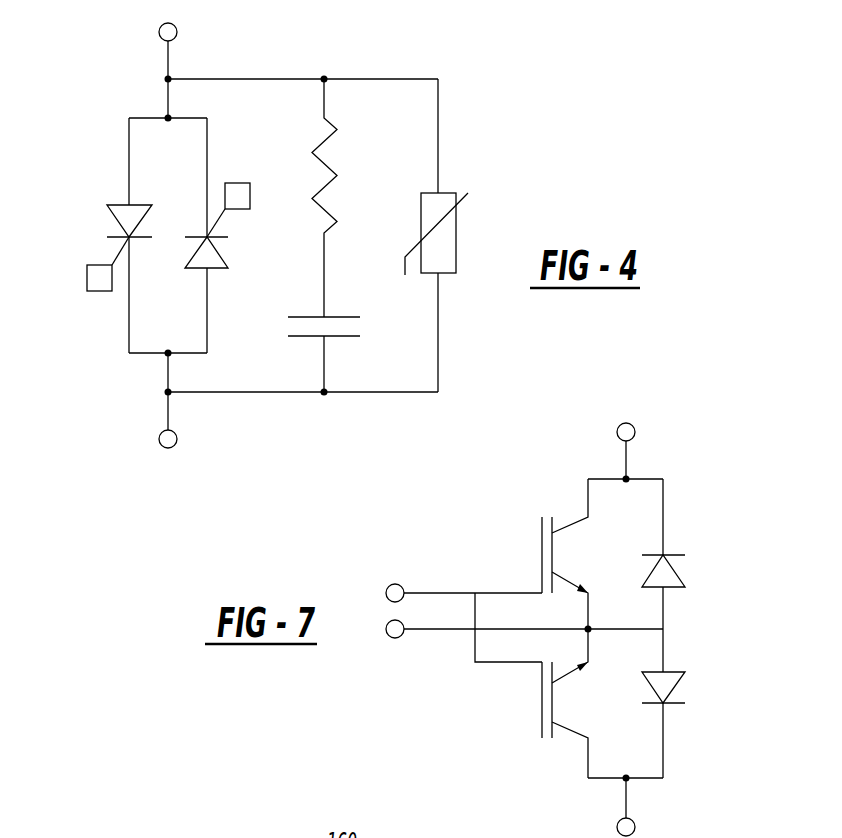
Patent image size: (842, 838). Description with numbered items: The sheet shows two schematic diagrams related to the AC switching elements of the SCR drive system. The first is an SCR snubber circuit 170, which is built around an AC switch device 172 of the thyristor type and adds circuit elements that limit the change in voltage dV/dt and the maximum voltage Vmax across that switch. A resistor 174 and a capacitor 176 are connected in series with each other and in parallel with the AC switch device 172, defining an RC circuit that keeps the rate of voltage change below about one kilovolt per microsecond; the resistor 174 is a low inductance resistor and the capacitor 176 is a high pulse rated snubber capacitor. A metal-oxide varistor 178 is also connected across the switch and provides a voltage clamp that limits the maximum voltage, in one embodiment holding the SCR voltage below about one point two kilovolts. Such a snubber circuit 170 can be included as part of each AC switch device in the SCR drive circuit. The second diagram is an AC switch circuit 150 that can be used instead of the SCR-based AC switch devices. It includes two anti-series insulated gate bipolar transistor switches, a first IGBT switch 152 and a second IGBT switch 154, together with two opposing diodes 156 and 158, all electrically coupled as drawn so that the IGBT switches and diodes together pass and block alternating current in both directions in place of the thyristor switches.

In FIG. 4, the SCR snubber circuit 170 is at (493, 77).
In FIG. 4, the AC switch device 172 is at (101, 197).
In FIG. 4, the resistor 174 is at (323, 162).
In FIG. 4, the capacitor 176 is at (301, 315).
In FIG. 4, the metal-oxide varistor 178 is at (457, 227).
In FIG. 7, the AC switch circuit 150 is at (725, 482).
In FIG. 7, the IGBT switch 152 is at (542, 548).
In FIG. 7, the IGBT switch 154 is at (542, 712).
In FIG. 7, the diode 156 is at (678, 577).
In FIG. 7, the diode 158 is at (678, 683).